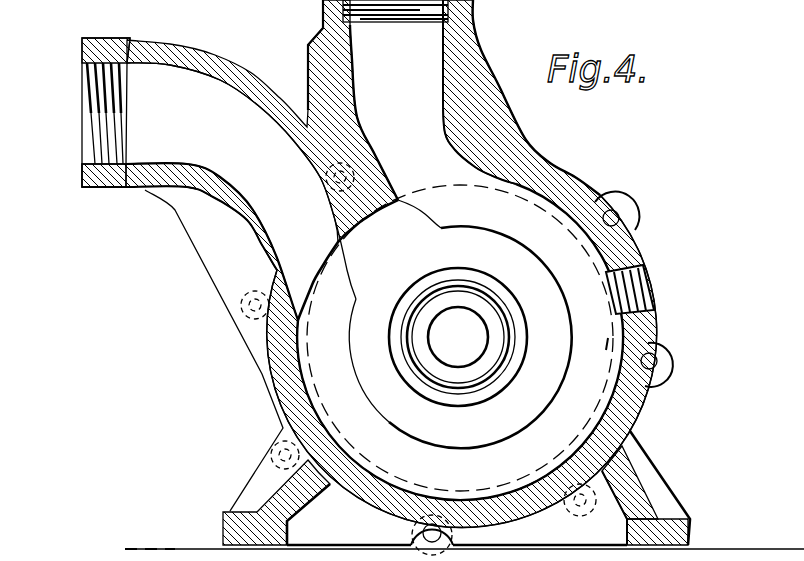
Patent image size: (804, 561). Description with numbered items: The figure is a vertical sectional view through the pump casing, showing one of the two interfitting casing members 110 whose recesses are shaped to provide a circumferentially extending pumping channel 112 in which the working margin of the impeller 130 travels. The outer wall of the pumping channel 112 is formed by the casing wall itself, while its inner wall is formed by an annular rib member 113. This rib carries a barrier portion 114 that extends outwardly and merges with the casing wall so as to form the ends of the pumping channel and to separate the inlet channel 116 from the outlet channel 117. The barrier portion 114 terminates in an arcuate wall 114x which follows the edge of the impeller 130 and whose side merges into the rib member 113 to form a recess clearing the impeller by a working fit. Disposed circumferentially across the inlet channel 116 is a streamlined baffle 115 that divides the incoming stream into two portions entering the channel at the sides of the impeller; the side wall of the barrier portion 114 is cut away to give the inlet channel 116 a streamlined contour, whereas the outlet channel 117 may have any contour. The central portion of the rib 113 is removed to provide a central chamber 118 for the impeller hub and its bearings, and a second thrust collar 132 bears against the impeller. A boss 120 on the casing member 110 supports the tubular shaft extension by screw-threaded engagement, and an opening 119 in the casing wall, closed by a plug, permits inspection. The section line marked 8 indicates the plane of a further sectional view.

The casing member 110 is at (560, 173).
The pumping channel 112 is at (542, 218).
The annular rib member 113 is at (540, 289).
The barrier portion 114 is at (430, 211).
The arcuate wall 114x is at (388, 205).
The baffle 115 is at (264, 262).
The inlet channel 116 is at (90, 143).
The outlet channel 117 is at (425, 80).
The central chamber 118 is at (508, 372).
The opening 119 is at (643, 290).
The boss 120 is at (408, 372).
The impeller 130 is at (607, 343).
The second thrust collar 132 is at (465, 375).
The section line 8- 8 is at (308, 113).